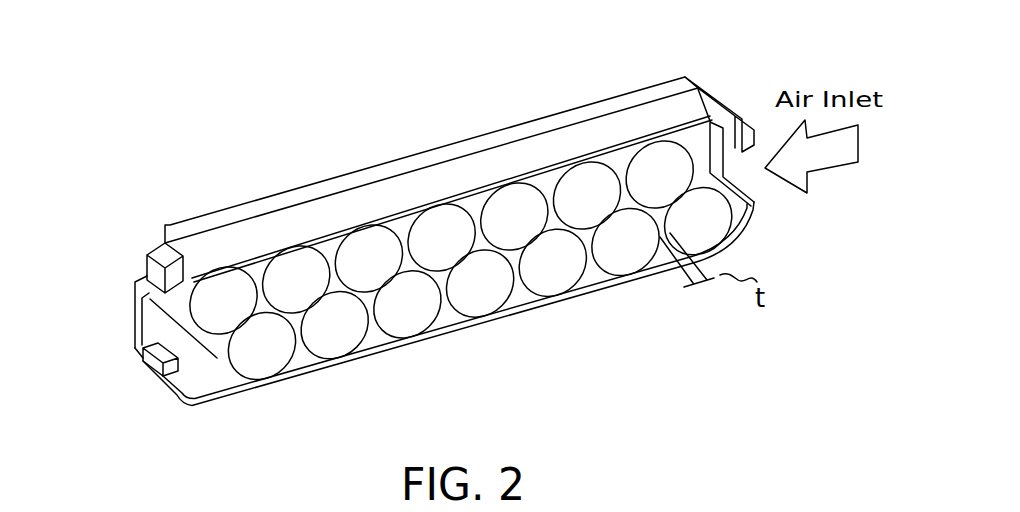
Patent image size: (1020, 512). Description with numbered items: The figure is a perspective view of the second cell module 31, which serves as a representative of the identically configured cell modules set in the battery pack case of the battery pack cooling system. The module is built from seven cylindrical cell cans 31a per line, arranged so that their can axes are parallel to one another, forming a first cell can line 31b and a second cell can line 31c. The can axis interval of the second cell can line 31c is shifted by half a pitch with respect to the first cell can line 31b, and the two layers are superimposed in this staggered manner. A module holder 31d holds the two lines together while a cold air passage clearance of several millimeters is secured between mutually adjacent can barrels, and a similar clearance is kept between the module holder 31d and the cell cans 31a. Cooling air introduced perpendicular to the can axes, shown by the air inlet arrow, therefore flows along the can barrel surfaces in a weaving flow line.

The second cell module 31 is at (380, 24).
The cell cans 31a is at (586, 193).
The first cell can line 31b is at (125, 352).
The second cell can line 31c is at (108, 283).
The module holder 31d is at (308, 218).